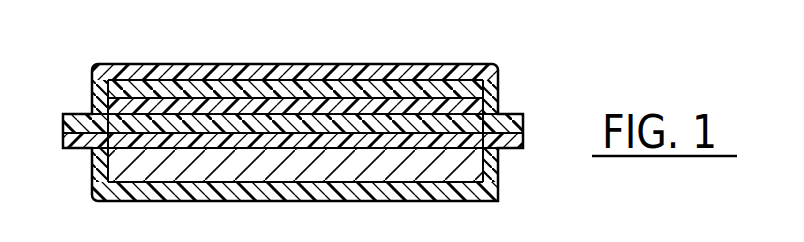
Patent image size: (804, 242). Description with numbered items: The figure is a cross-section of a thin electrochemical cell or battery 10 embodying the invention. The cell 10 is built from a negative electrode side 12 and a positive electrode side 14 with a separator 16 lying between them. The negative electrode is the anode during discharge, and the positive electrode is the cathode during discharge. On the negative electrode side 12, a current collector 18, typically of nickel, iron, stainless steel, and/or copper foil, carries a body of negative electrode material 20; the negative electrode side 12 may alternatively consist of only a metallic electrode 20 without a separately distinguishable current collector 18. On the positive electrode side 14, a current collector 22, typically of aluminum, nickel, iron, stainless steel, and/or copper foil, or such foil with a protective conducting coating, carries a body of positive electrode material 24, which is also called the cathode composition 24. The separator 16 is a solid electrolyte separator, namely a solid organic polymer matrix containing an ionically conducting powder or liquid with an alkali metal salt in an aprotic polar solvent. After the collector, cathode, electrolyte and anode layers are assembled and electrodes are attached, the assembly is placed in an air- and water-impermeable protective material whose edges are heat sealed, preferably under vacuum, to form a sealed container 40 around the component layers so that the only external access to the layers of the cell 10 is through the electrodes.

The electrochemical cell 10 is at (607, 49).
The negative electrode side 12 is at (205, 72).
The positive electrode side 14 is at (122, 186).
The separator 16 is at (487, 113).
The current collector 18 is at (363, 76).
The negative electrode material 20 is at (130, 108).
The current collector 22 is at (116, 165).
The positive electrode material 24 is at (468, 140).
The sealed container 40 is at (492, 202).